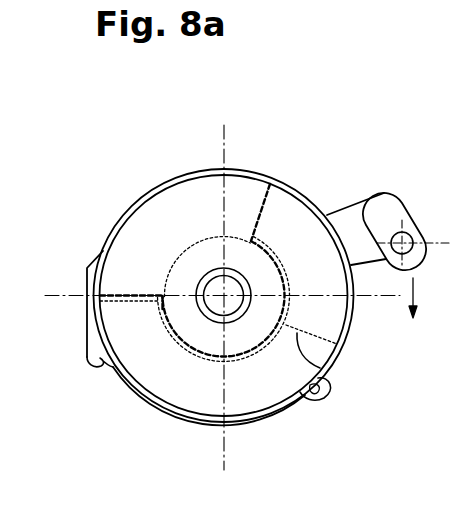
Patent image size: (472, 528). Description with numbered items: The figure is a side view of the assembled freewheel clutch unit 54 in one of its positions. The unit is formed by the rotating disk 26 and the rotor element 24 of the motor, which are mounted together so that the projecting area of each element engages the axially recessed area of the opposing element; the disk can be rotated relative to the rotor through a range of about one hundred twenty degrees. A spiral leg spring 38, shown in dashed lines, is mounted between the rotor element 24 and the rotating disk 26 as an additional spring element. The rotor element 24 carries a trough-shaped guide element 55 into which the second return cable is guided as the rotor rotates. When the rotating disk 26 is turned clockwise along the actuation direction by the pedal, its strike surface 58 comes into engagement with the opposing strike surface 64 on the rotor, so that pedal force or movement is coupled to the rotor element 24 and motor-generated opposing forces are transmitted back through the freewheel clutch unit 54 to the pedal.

The rotor element 24 is at (147, 411).
The rotating disk 26 is at (152, 184).
The spiral leg spring 38 is at (262, 176).
The freewheel clutch unit 54 is at (70, 138).
The guide element 55 is at (100, 364).
The strike surface 58 is at (305, 323).
The strike surface 64 is at (322, 369).